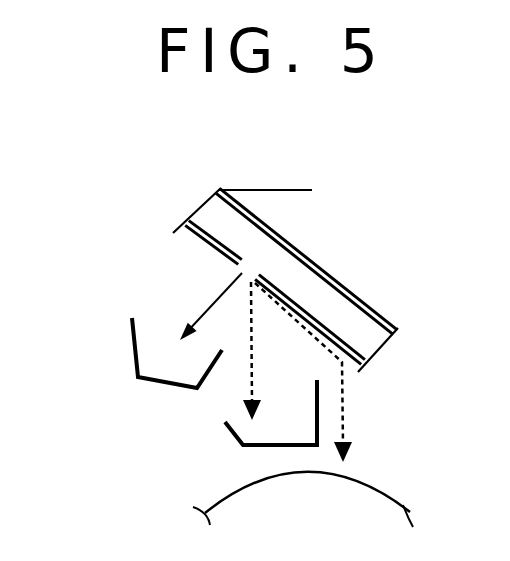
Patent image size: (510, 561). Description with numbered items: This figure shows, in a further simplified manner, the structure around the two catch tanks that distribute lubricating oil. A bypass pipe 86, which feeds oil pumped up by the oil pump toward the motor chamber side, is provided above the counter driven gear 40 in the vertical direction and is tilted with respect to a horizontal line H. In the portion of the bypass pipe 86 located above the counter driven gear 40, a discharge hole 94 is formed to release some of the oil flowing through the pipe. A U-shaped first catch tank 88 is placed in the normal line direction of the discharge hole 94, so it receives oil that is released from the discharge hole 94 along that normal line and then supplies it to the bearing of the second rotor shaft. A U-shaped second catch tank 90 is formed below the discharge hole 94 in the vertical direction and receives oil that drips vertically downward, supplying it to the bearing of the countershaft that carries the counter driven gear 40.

The horizontal line H is at (258, 190).
The bypass pipe 86 is at (337, 288).
The discharge hole 94 is at (238, 267).
The first catch tank 88 is at (132, 355).
The second catch tank 90 is at (237, 437).
The counter driven gear 40 is at (377, 492).